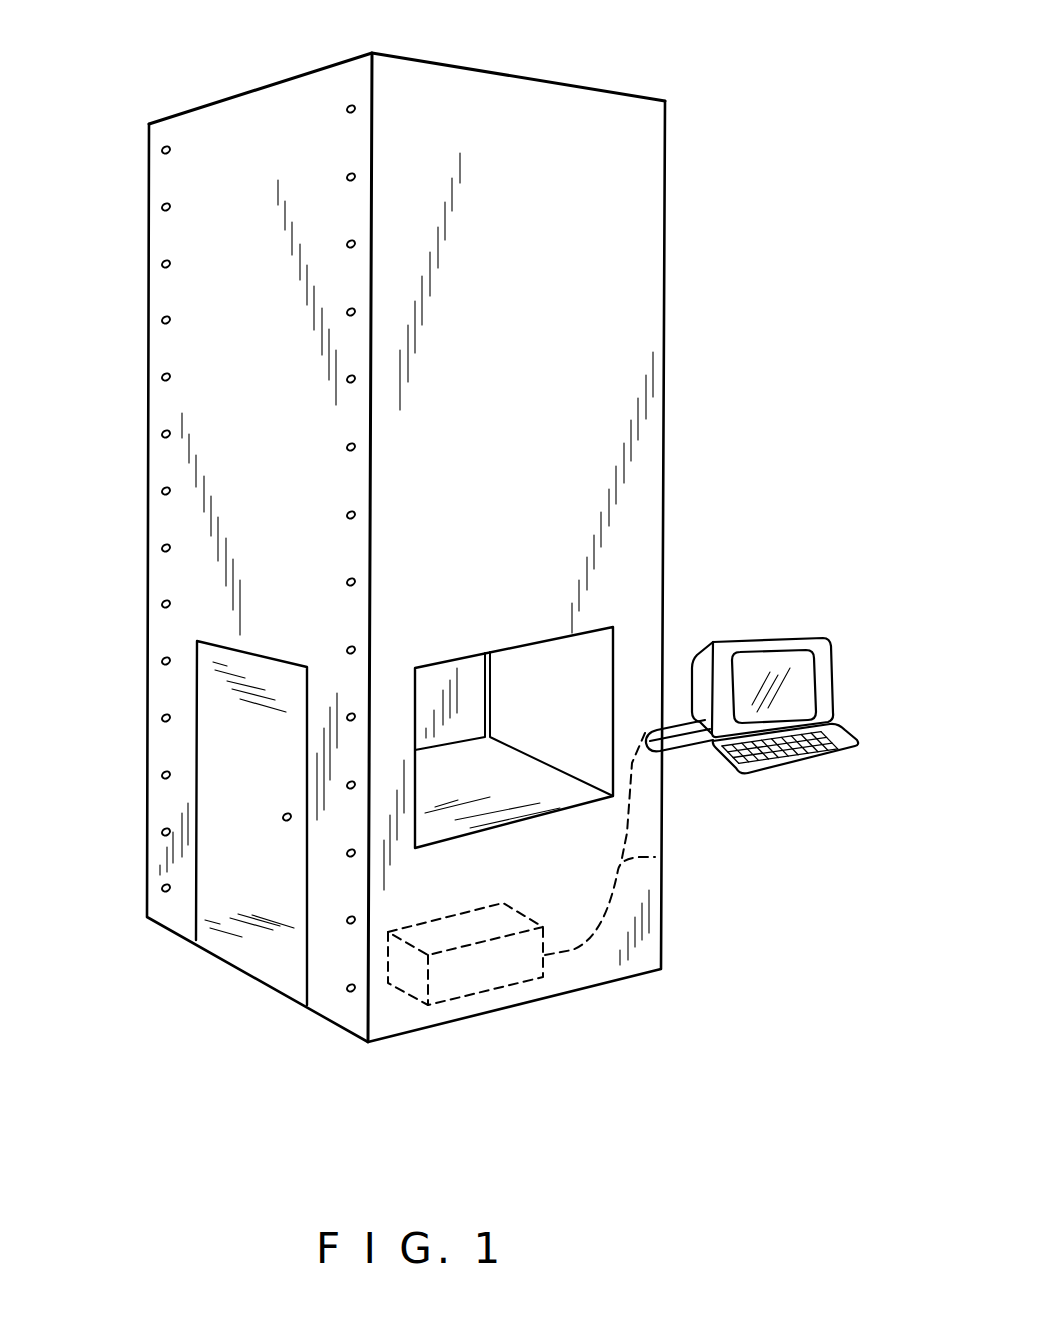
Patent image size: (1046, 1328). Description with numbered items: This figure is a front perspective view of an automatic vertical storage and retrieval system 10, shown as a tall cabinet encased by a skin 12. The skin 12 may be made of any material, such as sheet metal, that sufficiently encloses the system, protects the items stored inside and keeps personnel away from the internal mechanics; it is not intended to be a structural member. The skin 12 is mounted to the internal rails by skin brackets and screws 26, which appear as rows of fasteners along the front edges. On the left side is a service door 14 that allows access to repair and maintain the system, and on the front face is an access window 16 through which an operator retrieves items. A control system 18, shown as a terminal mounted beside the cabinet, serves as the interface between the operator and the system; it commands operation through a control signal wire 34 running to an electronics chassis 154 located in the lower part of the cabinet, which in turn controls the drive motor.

The automatic vertical storage and retrieval system 10 is at (696, 165).
The skin 12 is at (210, 147).
The service door 14 is at (232, 948).
The access window 16 is at (604, 665).
The control system 18 is at (833, 676).
The screws 26 is at (164, 377).
The control signal wire 34 is at (655, 857).
The electronics chassis 154 is at (488, 995).